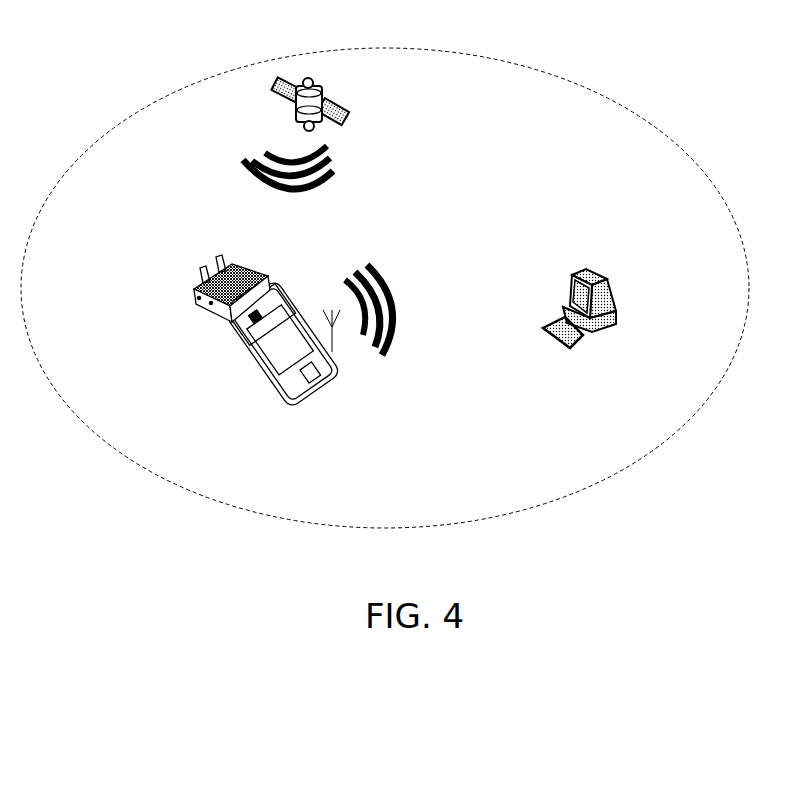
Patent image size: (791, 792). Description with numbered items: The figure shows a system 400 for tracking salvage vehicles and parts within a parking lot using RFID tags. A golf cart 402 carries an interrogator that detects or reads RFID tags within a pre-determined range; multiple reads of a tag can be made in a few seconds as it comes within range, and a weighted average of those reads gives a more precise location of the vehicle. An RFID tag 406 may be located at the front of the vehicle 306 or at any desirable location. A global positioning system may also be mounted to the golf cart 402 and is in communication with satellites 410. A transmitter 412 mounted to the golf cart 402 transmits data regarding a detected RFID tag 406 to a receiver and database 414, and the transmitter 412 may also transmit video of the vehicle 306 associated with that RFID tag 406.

The system of tracking salvage vehicles and parts 400 is at (592, 68).
The vehicle 306 is at (199, 297).
The golf cart 402 is at (265, 362).
The RFID tag 406 is at (208, 305).
The satellites 410 is at (348, 120).
The transmitter 412 is at (333, 352).
The receiver and database 414 is at (610, 288).